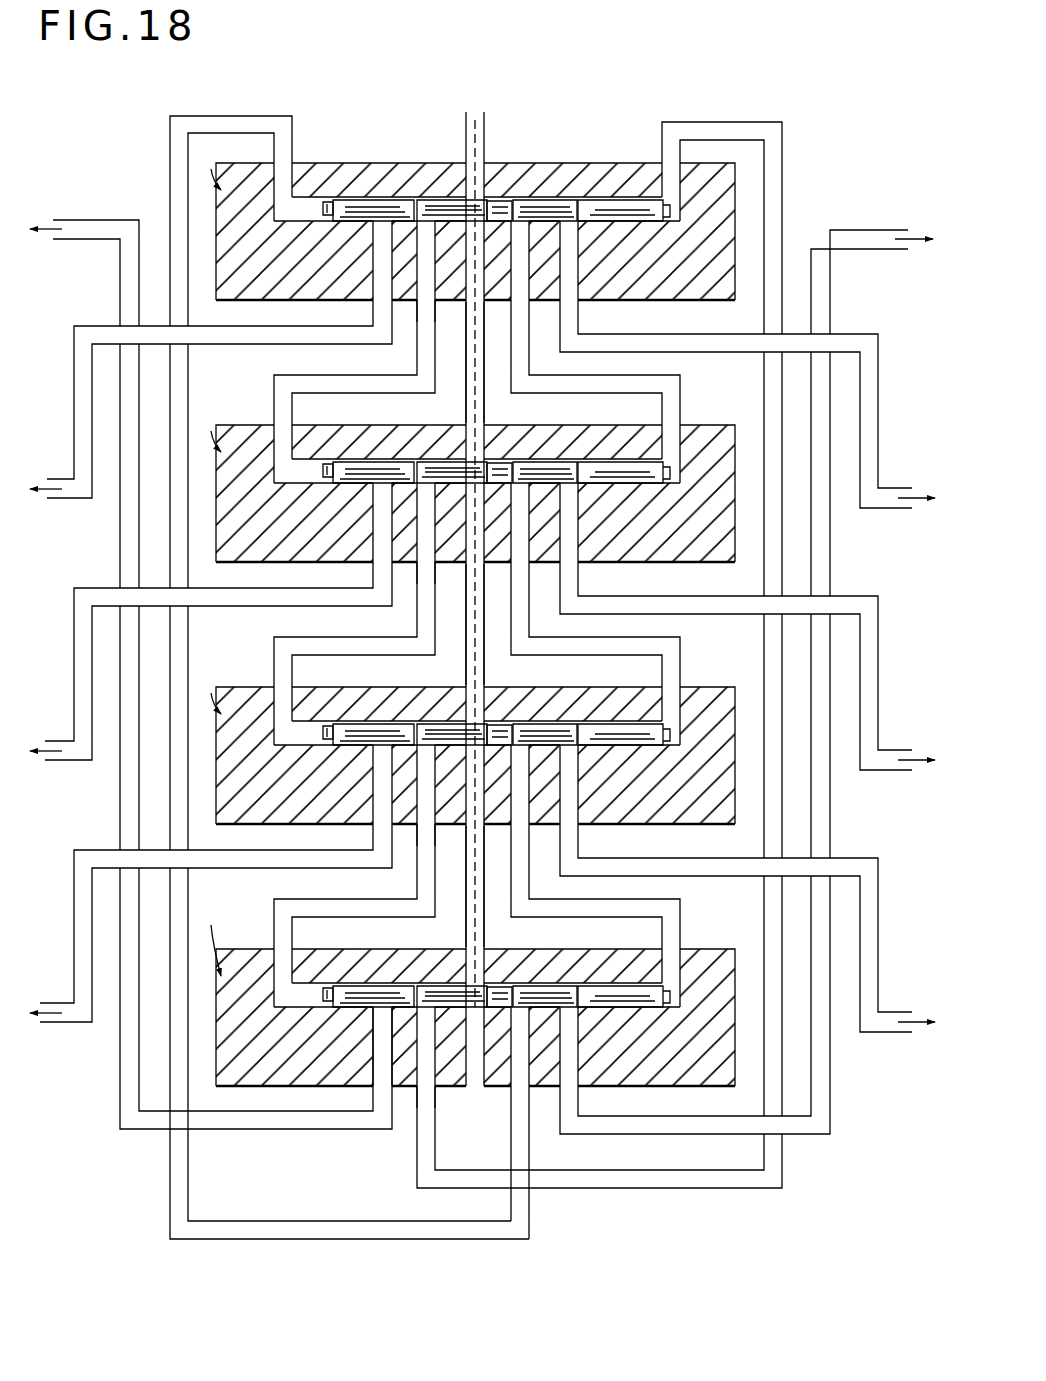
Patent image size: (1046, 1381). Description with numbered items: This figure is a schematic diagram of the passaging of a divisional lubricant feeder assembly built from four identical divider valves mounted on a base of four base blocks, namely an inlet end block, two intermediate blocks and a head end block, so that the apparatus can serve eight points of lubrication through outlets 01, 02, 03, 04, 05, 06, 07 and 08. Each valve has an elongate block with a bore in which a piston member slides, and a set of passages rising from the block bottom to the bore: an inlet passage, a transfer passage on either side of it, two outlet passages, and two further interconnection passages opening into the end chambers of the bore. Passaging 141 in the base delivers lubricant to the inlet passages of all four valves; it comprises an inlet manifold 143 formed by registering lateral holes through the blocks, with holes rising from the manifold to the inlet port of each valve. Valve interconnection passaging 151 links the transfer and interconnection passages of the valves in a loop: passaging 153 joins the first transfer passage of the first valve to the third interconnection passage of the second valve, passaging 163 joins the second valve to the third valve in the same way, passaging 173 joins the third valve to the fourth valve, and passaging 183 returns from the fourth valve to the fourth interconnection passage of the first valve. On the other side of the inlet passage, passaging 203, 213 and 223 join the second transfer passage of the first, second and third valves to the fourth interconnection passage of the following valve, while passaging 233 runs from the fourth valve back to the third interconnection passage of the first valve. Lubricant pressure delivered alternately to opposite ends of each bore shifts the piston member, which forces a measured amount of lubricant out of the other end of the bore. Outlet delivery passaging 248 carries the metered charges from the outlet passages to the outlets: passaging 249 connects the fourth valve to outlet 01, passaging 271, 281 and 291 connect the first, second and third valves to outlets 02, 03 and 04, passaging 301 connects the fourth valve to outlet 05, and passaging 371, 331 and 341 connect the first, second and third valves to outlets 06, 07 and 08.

The outlet 01 is at (878, 252).
The outlet 02 is at (62, 505).
The outlet 03 is at (62, 765).
The outlet 04 is at (63, 1027).
The outlet 05 is at (75, 246).
The outlet 06 is at (888, 512).
The outlet 07 is at (888, 774).
The outlet 08 is at (903, 1033).
The inlet passaging 141 is at (492, 118).
The inlet manifold 143 is at (482, 372).
The valve interconnection passaging 151 is at (736, 102).
The passaging 153 is at (330, 376).
The passaging 163 is at (330, 638).
The passaging 173 is at (330, 900).
The passaging 183 is at (786, 188).
The passaging 203 is at (668, 383).
The passaging 213 is at (668, 645).
The passaging 223 is at (668, 907).
The passaging 233 is at (253, 116).
The outlet delivery passaging 248 is at (883, 216).
The passaging 249 is at (820, 1136).
The passaging 271 is at (88, 323).
The passaging 281 is at (80, 590).
The passaging 291 is at (92, 850).
The passaging 301 is at (110, 190).
The passaging 331 is at (862, 598).
The passaging 341 is at (862, 860).
The outlet conduit 371 is at (852, 336).